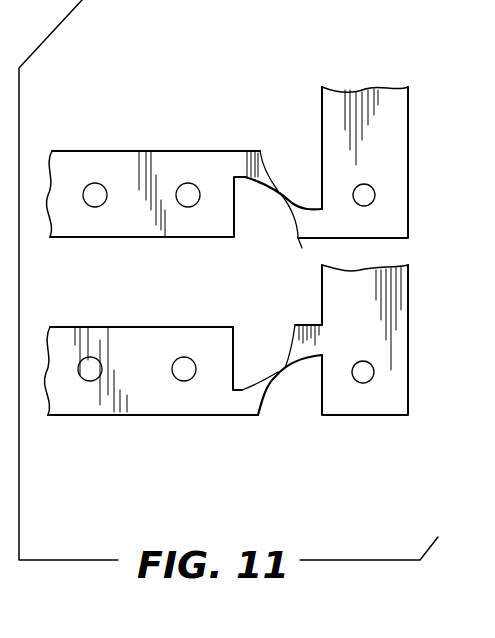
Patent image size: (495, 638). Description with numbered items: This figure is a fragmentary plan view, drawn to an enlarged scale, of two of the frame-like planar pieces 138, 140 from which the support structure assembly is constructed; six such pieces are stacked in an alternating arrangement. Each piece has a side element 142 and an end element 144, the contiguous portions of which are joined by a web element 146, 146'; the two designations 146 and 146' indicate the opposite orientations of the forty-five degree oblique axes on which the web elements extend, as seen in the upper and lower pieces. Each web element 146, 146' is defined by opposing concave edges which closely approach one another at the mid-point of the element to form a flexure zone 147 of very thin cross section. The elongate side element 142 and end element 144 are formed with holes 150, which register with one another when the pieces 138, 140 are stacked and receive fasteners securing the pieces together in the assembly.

The planar piece 138 is at (173, 160).
The planar piece 140 is at (207, 428).
The side element 142 is at (135, 215).
The end element 144 is at (392, 122).
The web element 146 is at (283, 228).
The web element 146' is at (295, 390).
The flexure zone 147 is at (280, 187).
The holes 150 is at (103, 193).